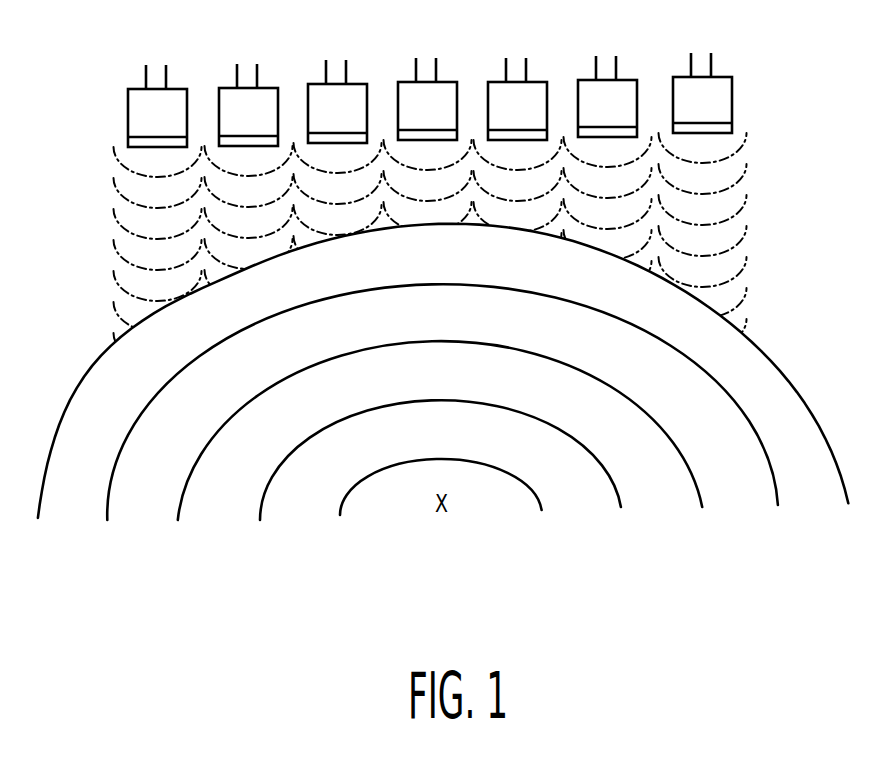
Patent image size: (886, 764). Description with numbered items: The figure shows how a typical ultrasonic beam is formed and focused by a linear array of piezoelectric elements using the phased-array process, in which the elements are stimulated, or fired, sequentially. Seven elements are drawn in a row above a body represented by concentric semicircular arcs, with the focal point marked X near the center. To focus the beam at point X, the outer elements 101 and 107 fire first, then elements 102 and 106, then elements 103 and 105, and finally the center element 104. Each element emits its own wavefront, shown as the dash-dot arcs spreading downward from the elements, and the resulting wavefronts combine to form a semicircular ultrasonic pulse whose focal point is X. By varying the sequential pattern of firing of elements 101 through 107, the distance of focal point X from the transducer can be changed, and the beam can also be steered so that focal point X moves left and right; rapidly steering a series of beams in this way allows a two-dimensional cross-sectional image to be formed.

The outer element 101 is at (137, 115).
The element 102 is at (229, 94).
The element 103 is at (354, 90).
The element 104 is at (445, 90).
The element 105 is at (533, 90).
The element 106 is at (622, 85).
The outer element 107 is at (725, 94).